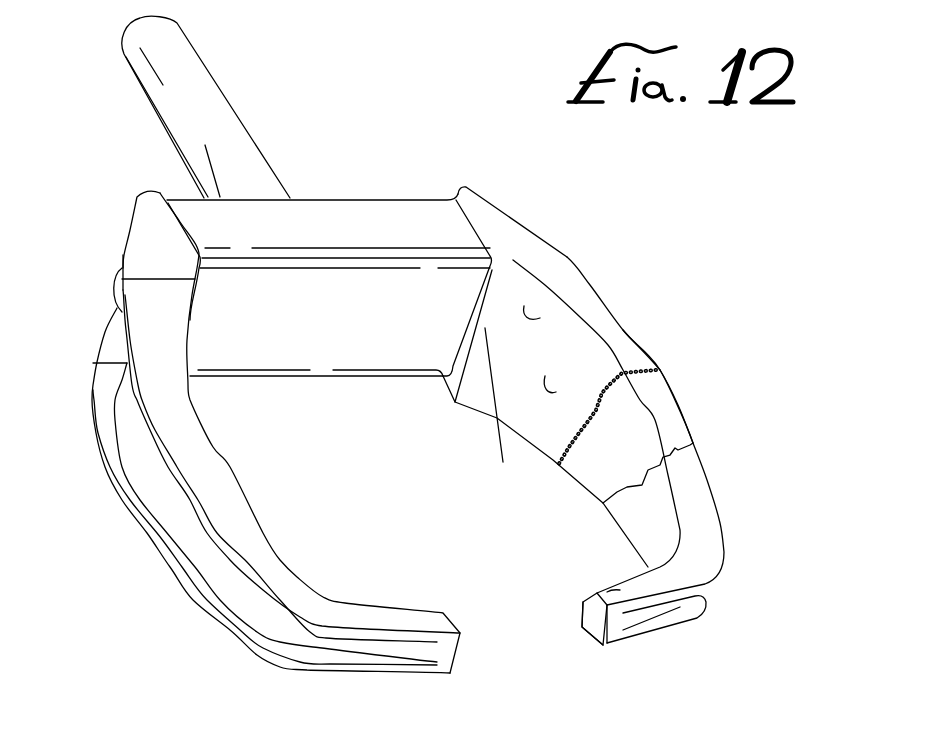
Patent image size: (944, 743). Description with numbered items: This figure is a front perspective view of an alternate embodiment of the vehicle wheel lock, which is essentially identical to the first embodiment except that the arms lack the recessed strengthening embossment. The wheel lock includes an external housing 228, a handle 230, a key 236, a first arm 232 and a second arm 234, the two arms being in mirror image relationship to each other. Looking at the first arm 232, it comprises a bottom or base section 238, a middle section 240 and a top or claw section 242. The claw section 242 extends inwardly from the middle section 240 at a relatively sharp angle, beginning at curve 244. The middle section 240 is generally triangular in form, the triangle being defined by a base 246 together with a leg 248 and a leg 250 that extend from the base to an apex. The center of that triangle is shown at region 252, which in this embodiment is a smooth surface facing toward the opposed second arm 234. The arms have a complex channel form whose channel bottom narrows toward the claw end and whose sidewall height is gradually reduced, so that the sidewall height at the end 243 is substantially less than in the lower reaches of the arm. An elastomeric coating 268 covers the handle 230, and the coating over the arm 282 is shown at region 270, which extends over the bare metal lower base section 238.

The external housing 228 is at (333, 207).
The handle 230 is at (218, 72).
The first arm 232 is at (625, 305).
The second arm 234 is at (187, 608).
The key 236 is at (115, 285).
The base section 238 is at (497, 220).
The middle section 240 is at (663, 360).
The claw section 242 is at (668, 636).
The end 243 is at (592, 630).
The curve 244 is at (725, 557).
The base 246 is at (479, 414).
The leg 248 is at (587, 492).
The leg 250 is at (663, 403).
The center region 252 is at (545, 376).
The elastomeric coating 268 is at (228, 120).
The coating region 270 is at (524, 306).
The arm 282 is at (623, 338).